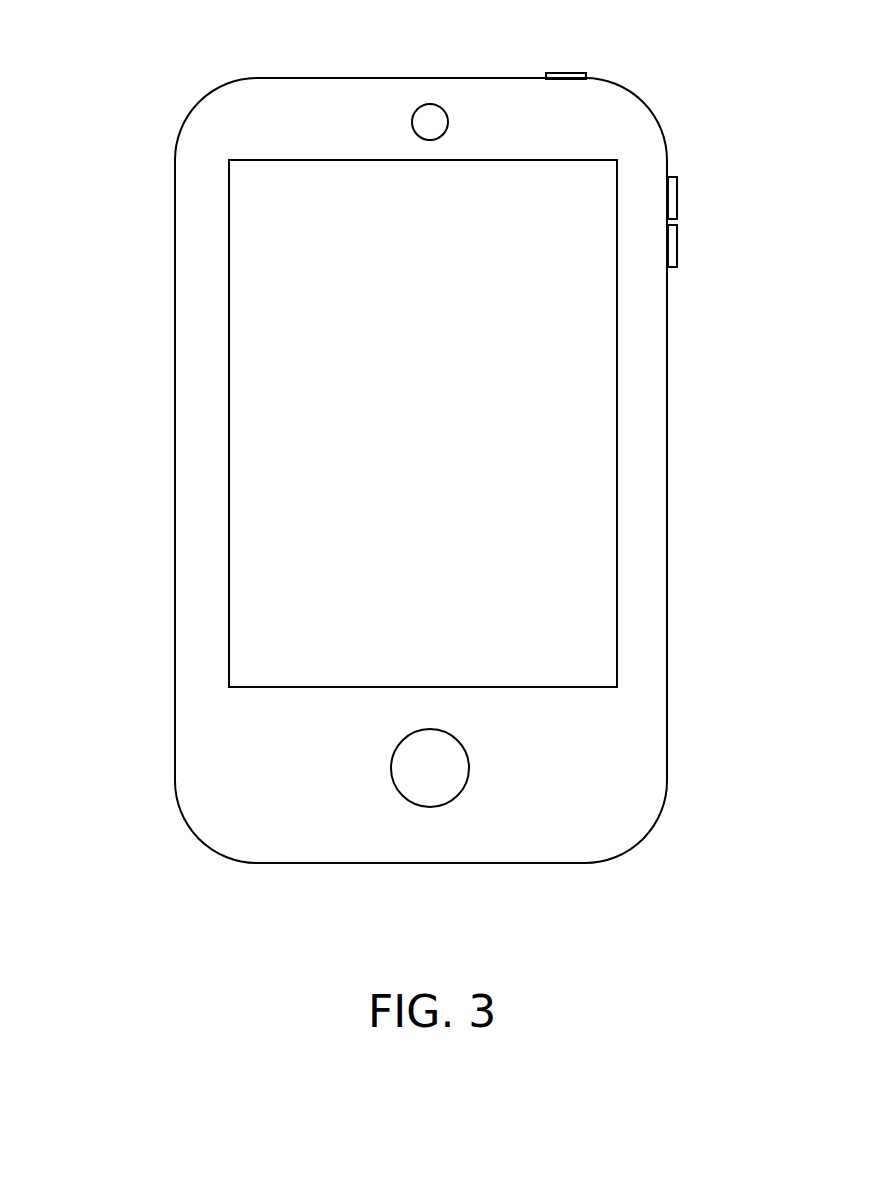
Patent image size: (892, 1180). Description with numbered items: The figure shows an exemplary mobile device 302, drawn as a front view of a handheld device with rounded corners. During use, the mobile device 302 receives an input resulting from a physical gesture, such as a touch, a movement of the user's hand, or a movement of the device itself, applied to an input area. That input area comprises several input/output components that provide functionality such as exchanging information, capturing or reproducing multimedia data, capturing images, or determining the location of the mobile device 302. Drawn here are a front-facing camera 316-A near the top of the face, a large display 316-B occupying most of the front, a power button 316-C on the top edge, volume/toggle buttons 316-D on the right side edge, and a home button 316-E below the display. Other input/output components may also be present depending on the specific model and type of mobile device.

The mobile device 302 is at (155, 97).
The camera 316-A is at (430, 104).
The display 316-B is at (587, 447).
The power button 316-C is at (566, 73).
The volume/toggle buttons 316-D is at (677, 200).
The home button 316-E is at (468, 767).